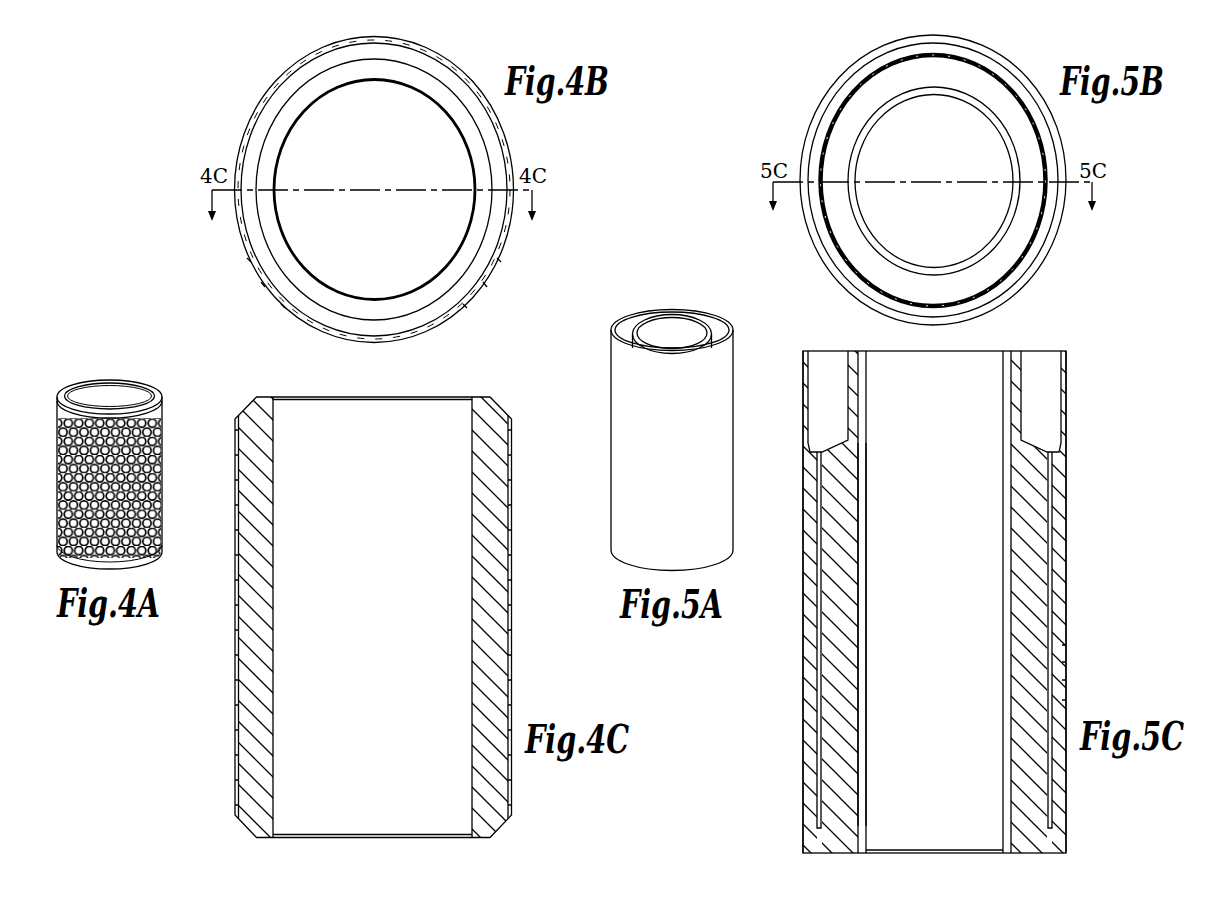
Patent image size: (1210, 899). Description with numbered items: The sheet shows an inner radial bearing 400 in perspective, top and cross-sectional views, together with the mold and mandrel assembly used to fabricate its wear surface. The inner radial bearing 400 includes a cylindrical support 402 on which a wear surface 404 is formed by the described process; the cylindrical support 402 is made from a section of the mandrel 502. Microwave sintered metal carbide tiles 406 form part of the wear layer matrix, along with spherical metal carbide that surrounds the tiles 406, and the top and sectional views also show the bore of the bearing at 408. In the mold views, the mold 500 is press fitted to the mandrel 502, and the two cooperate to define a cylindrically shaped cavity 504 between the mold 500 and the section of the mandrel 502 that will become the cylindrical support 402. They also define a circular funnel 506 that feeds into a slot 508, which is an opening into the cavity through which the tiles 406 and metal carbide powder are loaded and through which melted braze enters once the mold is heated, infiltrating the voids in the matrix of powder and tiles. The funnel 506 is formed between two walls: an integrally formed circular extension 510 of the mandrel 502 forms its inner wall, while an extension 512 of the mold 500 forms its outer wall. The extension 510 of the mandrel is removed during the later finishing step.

In FIG. 4B, the inner radial bearing 400 is at (230, 121).
In FIG. 4A, the inner radial bearing 400 is at (70, 368).
In FIG. 4A, the cylindrical support 402 is at (158, 397).
In FIG. 5C, the cylindrical support 402 is at (866, 440).
In FIG. 4B, the wear surface 404 is at (516, 155).
In FIG. 4A, the wear surface 404 is at (169, 406).
In FIG. 4C, the wear surface 404 is at (226, 666).
In FIG. 4B, the microwave sintered metal carbide tiles 406 is at (282, 305).
In FIG. 4A, the microwave sintered metal carbide tiles 406 is at (162, 512).
In FIG. 4C, the microwave sintered metal carbide tiles 406 is at (235, 600).
In FIG. 5C, the microwave sintered metal carbide tiles 406 is at (1066, 700).
In FIG. 4B, the inner bore wall 408 is at (473, 243).
In FIG. 5A, the mold 500 is at (727, 561).
In FIG. 5B, the mold 500 is at (1066, 244).
In FIG. 5C, the mold 500 is at (1073, 611).
In FIG. 5B, the mandrel 502 is at (997, 235).
In FIG. 5C, the mandrel 502 is at (1012, 500).
In FIG. 5C, the cylindrically shaped cavity 504 is at (1056, 470).
In FIG. 5A, the circular funnel 506 is at (626, 324).
In FIG. 5B, the circular funnel 506 is at (815, 140).
In FIG. 5C, the circular funnel 506 is at (829, 372).
In FIG. 5A, the slot 508 is at (697, 318).
In FIG. 5C, the slot 508 is at (822, 436).
In FIG. 5A, the circular extension of the mandrel 510 is at (724, 333).
In FIG. 5C, the circular extension of the mandrel 510 is at (866, 351).
In FIG. 5A, the extension of the mold 512 is at (800, 352).
In FIG. 5C, the extension of the mold 512 is at (800, 352).